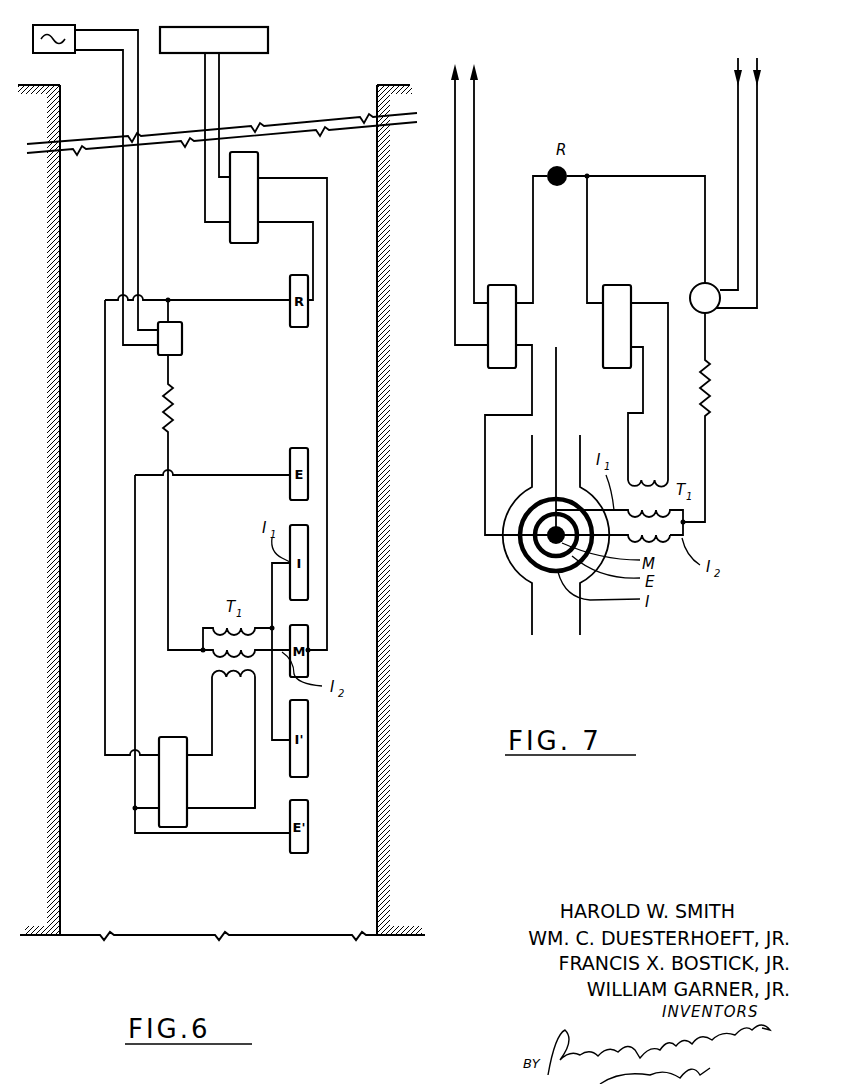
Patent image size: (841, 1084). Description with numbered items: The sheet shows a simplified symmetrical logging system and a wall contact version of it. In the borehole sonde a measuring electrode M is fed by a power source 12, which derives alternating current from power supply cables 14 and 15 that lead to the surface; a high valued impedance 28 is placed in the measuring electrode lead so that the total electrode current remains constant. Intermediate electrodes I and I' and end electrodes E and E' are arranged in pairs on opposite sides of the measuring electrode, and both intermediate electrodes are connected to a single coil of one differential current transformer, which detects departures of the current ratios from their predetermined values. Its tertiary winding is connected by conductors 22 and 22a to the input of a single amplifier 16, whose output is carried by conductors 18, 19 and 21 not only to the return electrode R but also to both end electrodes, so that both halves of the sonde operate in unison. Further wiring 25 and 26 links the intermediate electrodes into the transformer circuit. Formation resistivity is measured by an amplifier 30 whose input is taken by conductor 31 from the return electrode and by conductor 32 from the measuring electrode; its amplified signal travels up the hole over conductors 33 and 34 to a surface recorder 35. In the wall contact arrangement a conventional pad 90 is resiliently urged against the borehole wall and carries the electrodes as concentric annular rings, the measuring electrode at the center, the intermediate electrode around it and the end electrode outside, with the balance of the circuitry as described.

In FIG. 6, the power source 12 is at (182, 337).
In FIG. 7, the power source 12 is at (707, 283).
In FIG. 6, the power supply cable 14 is at (138, 221).
In FIG. 7, the power supply cable 14 is at (757, 150).
In FIG. 6, the power supply cable 15 is at (123, 195).
In FIG. 7, the power supply cable 15 is at (738, 133).
In FIG. 6, the amplifier 16 is at (187, 770).
In FIG. 7, the amplifier 16 is at (626, 283).
In FIG. 6, the conductor 18 is at (137, 674).
In FIG. 6, the conductor 19 is at (105, 632).
In FIG. 6, the conductor 21 is at (218, 835).
In FIG. 6, the conductor 22 is at (212, 706).
In FIG. 6, the conductor 22a is at (255, 776).
In FIG. 6, the conductor 25 is at (272, 571).
In FIG. 6, the conductor 26 is at (274, 694).
In FIG. 6, the high valued impedance 28 is at (172, 407).
In FIG. 7, the high valued impedance 28 is at (710, 396).
In FIG. 6, the amplifier 30 is at (258, 197).
In FIG. 7, the amplifier 30 is at (516, 320).
In FIG. 6, the conductor 31 is at (292, 223).
In FIG. 7, the conductor 31 is at (533, 237).
In FIG. 6, the conductor 32 is at (327, 505).
In FIG. 6, the conductor 33 is at (219, 75).
In FIG. 7, the conductor 33 is at (474, 133).
In FIG. 6, the conductor 34 is at (205, 97).
In FIG. 7, the conductor 34 is at (455, 185).
In FIG. 6, the recorder 35 is at (268, 31).
In FIG. 7, the pad 90 is at (558, 621).